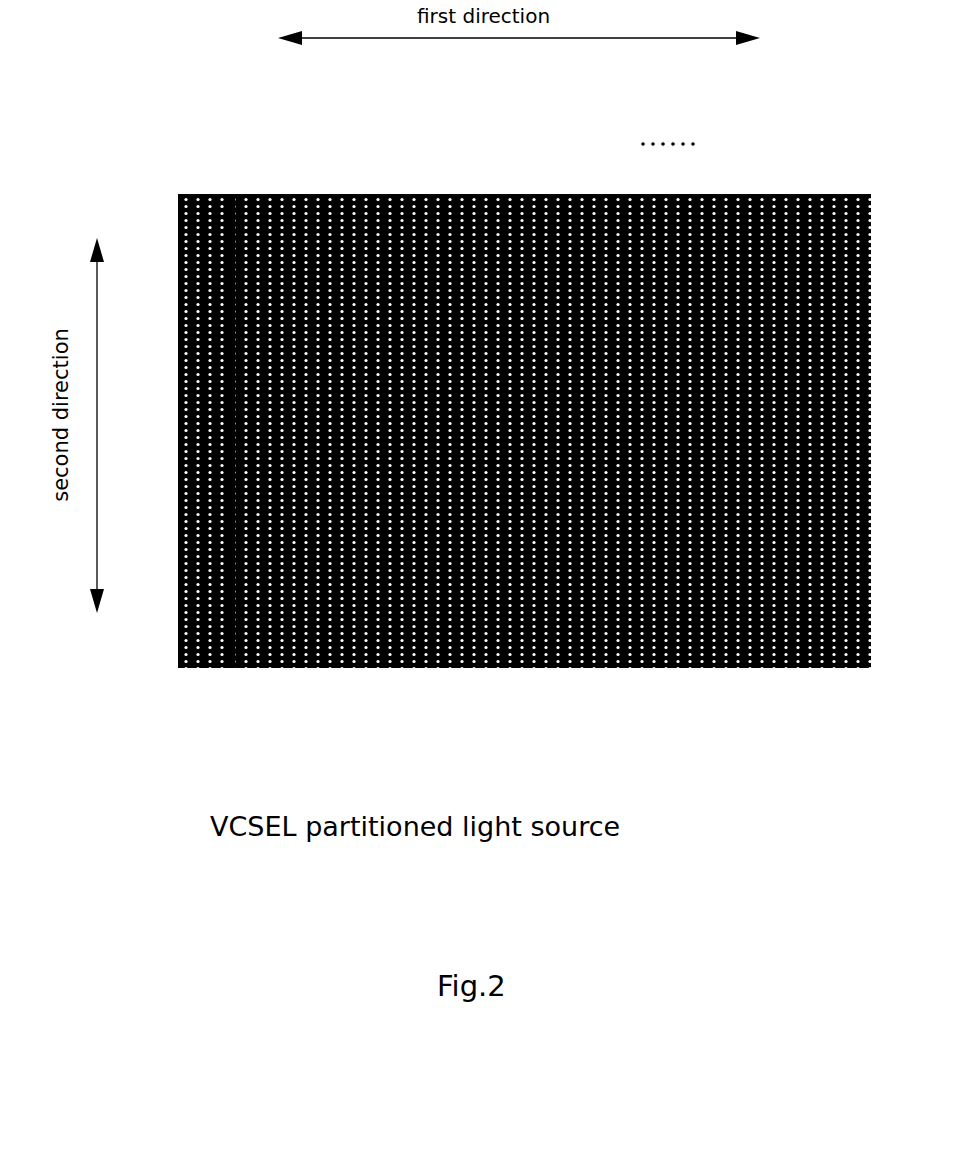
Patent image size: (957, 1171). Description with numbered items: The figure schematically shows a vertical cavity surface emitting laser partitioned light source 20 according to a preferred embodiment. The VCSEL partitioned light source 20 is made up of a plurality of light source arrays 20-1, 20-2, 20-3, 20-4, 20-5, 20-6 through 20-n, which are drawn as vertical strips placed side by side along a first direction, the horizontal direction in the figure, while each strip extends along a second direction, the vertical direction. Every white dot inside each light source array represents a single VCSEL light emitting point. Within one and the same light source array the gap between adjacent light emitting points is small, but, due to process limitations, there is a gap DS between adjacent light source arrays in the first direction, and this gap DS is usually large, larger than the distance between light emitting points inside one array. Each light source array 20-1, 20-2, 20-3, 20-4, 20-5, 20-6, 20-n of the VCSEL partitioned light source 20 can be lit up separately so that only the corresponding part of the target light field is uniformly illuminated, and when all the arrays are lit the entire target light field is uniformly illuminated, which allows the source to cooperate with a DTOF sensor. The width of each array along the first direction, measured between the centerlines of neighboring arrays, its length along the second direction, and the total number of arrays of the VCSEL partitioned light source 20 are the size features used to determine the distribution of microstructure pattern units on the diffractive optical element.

The VCSEL partitioned light source 20 is at (664, 841).
The light source array 20-1 is at (215, 193).
The light source array 20-2 is at (280, 670).
The light source array 20-3 is at (325, 193).
The light source array 20-4 is at (393, 670).
The light source array 20-5 is at (440, 193).
The light source array 20-6 is at (515, 670).
The light source array 20-n is at (852, 193).
The gap DS is at (232, 193).